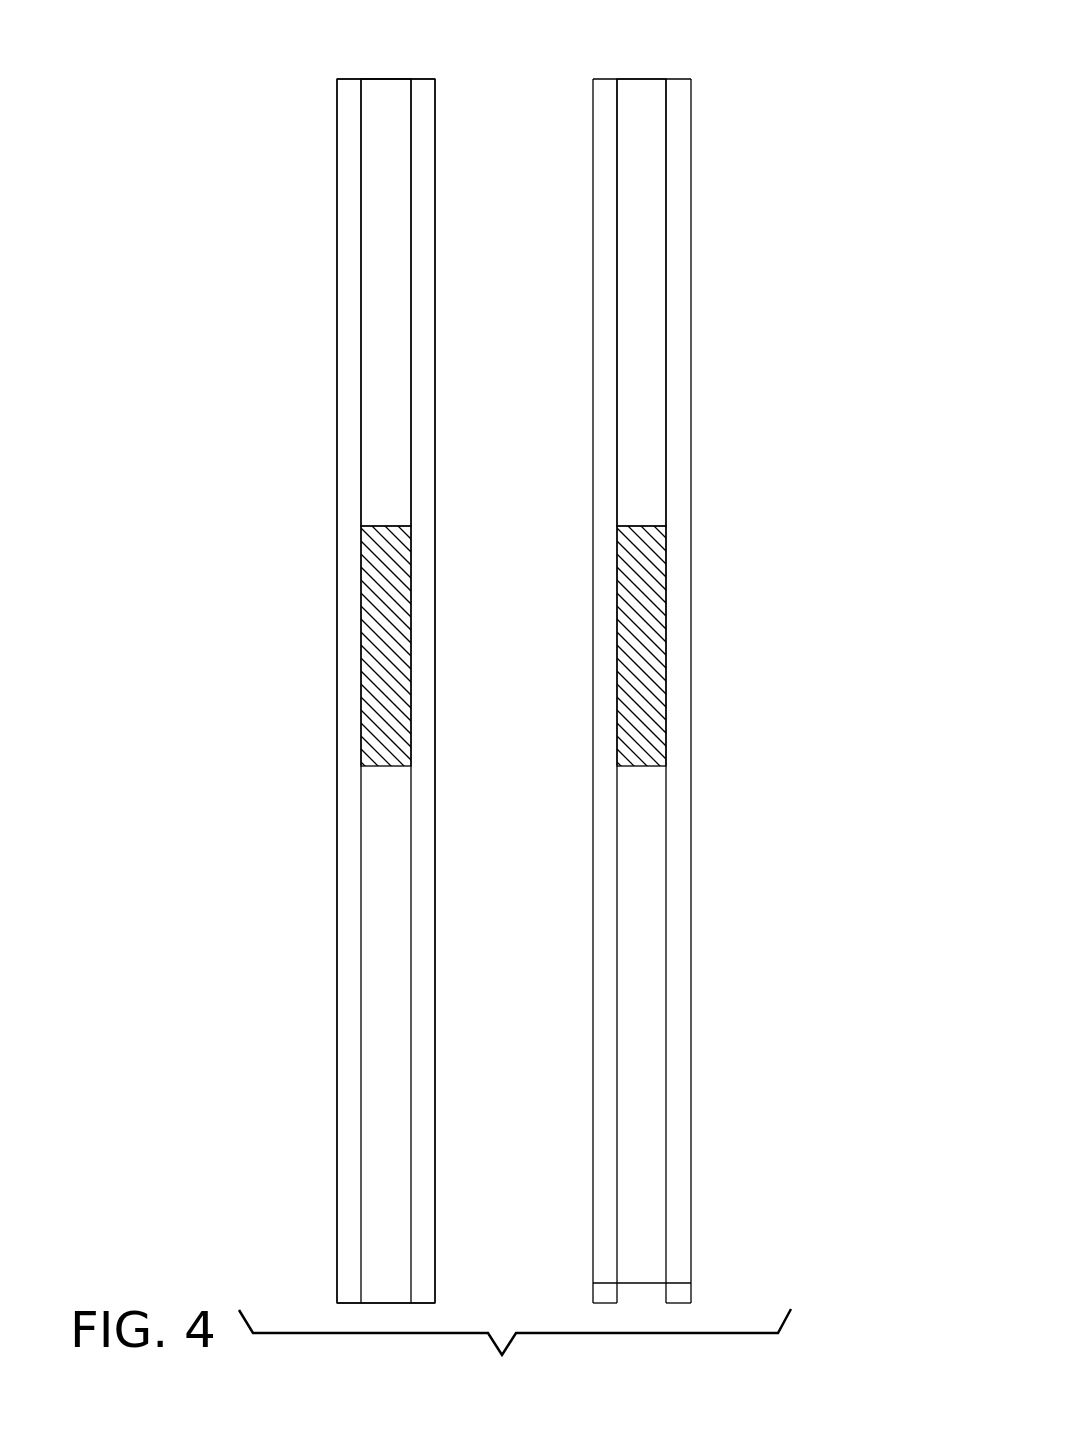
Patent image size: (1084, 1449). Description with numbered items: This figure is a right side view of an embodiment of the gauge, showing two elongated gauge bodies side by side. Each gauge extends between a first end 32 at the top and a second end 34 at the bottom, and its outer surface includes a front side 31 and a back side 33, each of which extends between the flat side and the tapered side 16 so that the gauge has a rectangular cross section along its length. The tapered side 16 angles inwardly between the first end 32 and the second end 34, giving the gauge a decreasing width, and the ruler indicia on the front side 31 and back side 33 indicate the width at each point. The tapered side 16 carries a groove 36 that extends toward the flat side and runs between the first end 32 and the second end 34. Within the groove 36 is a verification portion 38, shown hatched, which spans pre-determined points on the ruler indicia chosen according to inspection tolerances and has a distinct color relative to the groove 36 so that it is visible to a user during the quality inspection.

The tapered side 16 is at (349, 991).
The front side 31 is at (337, 534).
The first end 32 is at (347, 80).
The back side 33 is at (436, 293).
The second end 34 is at (363, 1305).
The groove 36 is at (338, 250).
The verification portion 38 is at (343, 627).